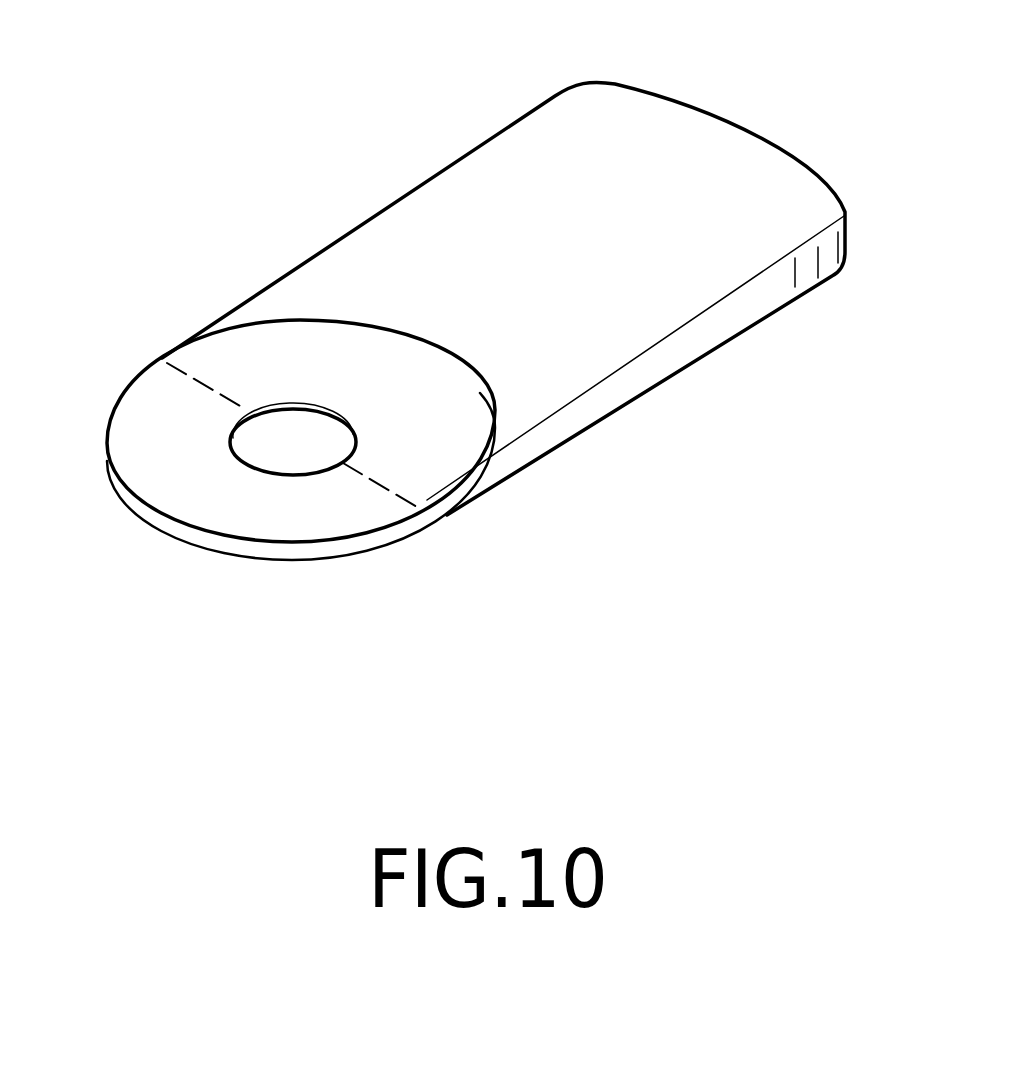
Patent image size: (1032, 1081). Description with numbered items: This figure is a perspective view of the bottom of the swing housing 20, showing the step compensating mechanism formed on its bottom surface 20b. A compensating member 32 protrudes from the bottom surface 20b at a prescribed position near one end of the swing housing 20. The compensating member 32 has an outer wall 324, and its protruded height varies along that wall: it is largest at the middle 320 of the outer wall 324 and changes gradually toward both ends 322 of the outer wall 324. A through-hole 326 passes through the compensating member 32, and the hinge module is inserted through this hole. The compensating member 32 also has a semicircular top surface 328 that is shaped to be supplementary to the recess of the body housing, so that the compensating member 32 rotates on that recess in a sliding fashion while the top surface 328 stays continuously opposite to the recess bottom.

The swing housing 20 is at (544, 257).
The bottom surface of swing housing 20b is at (773, 202).
The compensating member 32 is at (422, 370).
The middle of outer wall 320 is at (460, 370).
The ends of outer wall 322 is at (160, 358).
The outer wall 324 is at (497, 422).
The through-hole 326 is at (290, 460).
The top surface of compensating member 328 is at (405, 373).